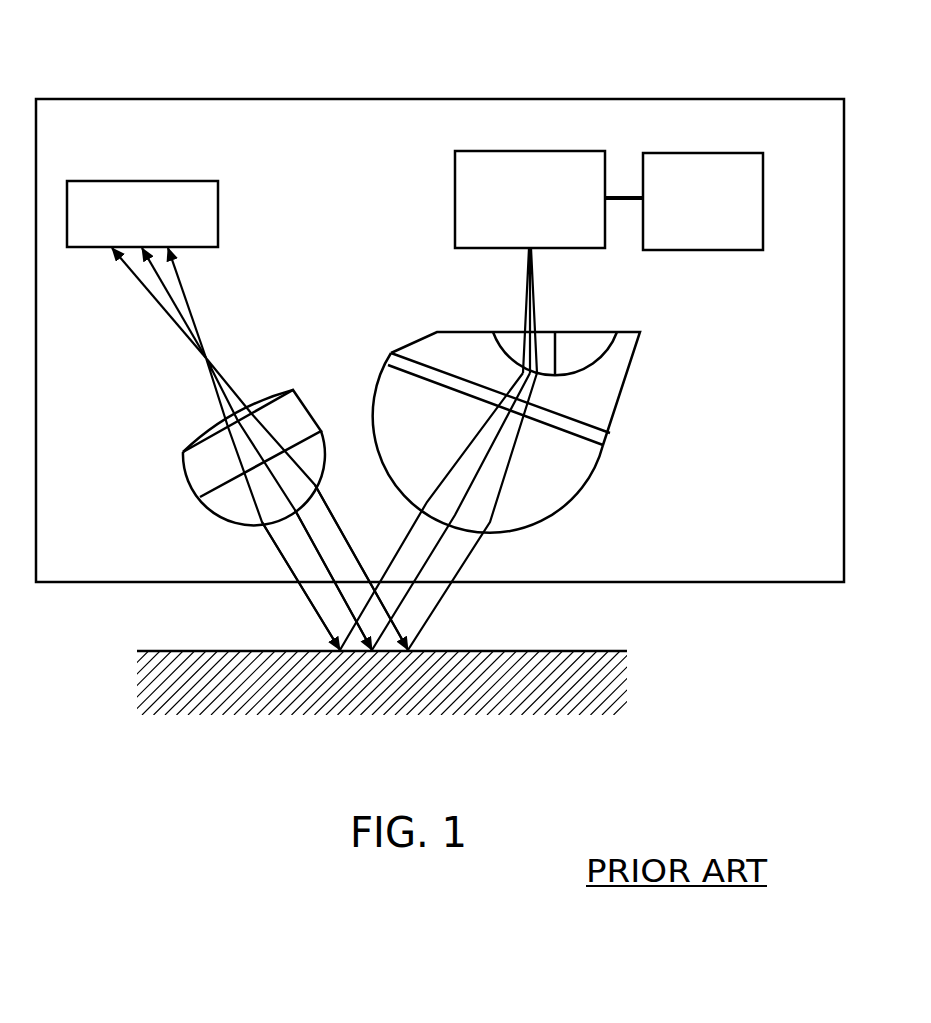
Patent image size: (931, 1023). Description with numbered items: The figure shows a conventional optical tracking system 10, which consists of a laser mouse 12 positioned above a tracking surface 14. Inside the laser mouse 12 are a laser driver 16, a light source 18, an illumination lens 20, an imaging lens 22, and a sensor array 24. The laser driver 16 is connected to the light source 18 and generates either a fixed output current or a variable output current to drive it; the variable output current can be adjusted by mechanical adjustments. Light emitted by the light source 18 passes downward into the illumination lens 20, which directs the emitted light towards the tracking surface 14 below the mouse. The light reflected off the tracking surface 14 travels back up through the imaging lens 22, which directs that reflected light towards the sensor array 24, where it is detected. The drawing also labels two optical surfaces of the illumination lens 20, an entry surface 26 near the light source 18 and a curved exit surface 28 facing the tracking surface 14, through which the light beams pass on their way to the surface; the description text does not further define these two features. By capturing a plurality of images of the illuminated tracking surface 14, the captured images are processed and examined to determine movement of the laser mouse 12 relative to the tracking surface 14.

The optical tracking system 10 is at (160, 47).
The laser mouse 12 is at (369, 98).
The tracking surface 14 is at (596, 645).
The laser driver 16 is at (764, 206).
The light source 18 is at (453, 199).
The illumination lens 20 is at (383, 365).
The imaging lens 22 is at (196, 478).
The sensor array 24 is at (218, 213).
The lens surface 26 is at (618, 350).
The lens surface 28 is at (560, 503).